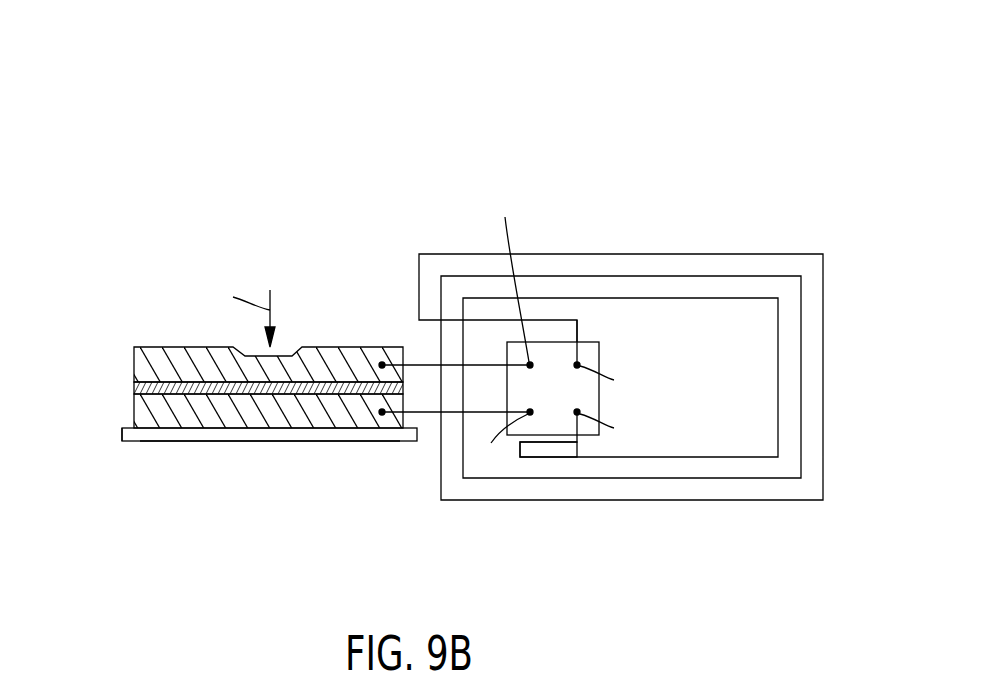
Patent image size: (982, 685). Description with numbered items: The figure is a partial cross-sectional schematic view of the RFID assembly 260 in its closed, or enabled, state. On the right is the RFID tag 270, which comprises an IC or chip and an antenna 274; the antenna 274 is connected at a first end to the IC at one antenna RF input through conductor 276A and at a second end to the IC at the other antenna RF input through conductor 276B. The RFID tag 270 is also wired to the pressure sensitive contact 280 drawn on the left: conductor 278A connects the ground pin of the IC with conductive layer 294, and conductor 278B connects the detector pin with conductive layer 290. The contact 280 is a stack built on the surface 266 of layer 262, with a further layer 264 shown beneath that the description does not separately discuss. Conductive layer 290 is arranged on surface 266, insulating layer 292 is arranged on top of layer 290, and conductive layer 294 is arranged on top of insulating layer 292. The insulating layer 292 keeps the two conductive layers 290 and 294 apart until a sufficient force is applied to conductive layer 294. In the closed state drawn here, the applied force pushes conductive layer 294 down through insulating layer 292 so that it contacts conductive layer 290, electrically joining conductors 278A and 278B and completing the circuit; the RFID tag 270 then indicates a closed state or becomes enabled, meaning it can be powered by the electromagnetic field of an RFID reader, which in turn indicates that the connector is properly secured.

The RFID assembly 260 is at (727, 89).
The RFID tag 270 is at (451, 211).
The antenna 274 is at (782, 255).
The conductor 276A is at (565, 318).
The conductor 276B is at (562, 457).
The conductor 278A is at (430, 362).
The conductor 278B is at (433, 414).
The contact 280 is at (138, 286).
The layer 262 is at (128, 436).
The substrate 264 is at (230, 442).
The surface 266 is at (122, 428).
The conductive layer 290 is at (143, 421).
The insulating layer 292 is at (143, 387).
The conductive layer 294 is at (142, 363).